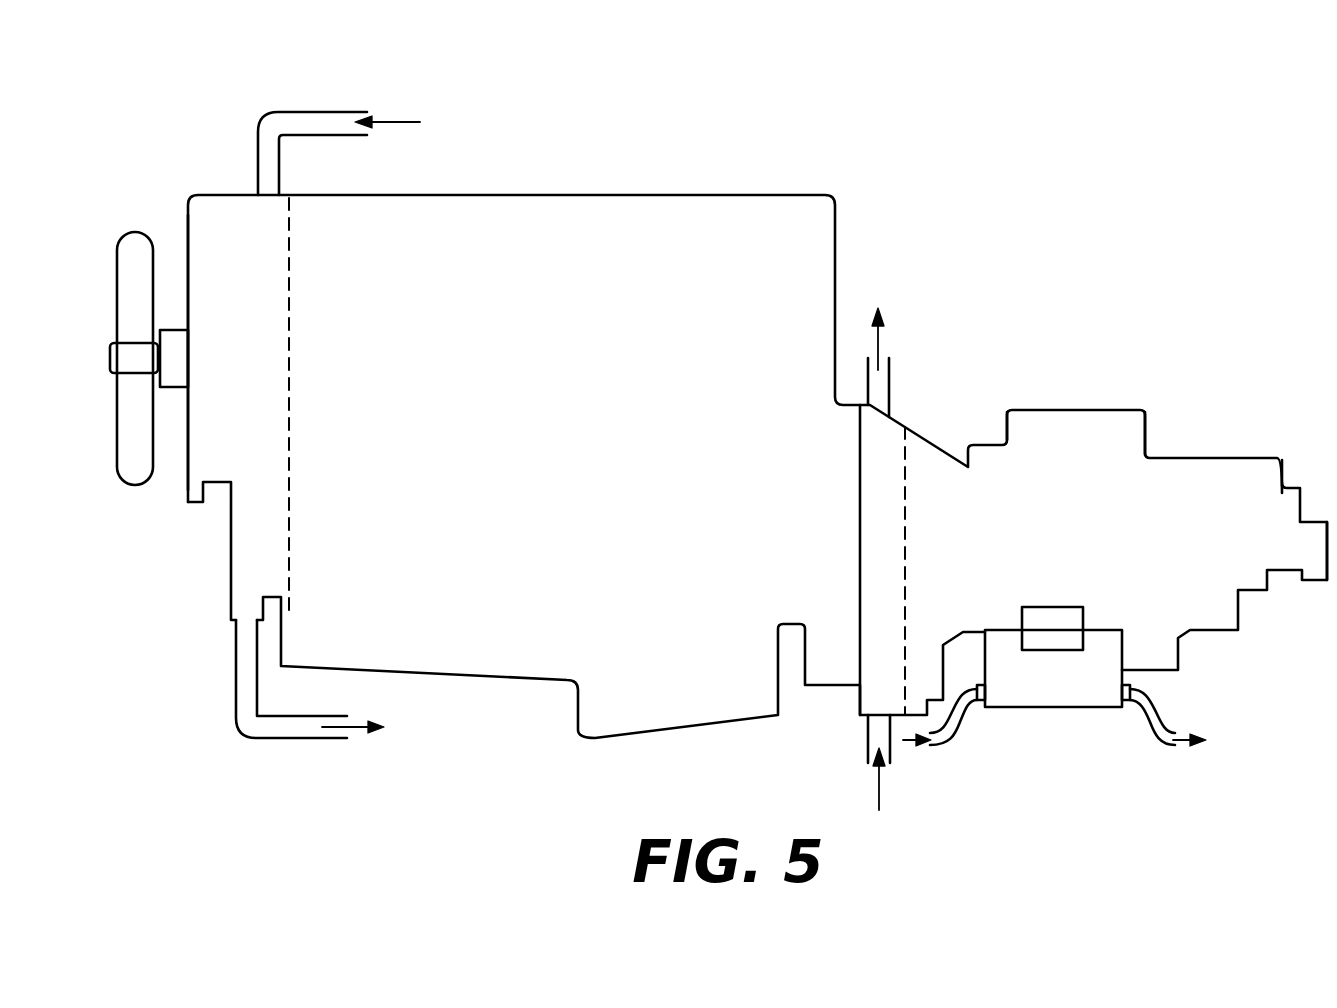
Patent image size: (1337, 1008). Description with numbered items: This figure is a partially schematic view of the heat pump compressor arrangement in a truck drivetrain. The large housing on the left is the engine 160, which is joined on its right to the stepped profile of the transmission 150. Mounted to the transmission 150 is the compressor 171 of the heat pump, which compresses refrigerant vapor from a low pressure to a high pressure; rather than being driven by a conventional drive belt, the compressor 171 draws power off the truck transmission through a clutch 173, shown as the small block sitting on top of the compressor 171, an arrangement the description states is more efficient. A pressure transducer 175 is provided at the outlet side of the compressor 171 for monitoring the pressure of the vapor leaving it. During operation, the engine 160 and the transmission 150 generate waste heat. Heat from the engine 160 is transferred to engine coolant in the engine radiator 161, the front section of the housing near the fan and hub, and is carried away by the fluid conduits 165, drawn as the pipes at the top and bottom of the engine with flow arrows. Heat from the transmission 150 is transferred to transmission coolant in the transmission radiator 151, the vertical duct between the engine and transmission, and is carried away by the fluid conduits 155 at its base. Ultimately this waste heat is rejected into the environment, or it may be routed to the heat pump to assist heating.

The transmission 150 is at (1062, 505).
The transmission radiator 151 is at (892, 457).
The fluid conduits 155 is at (868, 738).
The engine 160 is at (527, 182).
The engine radiator 161 is at (243, 220).
The fluid conduits 165 is at (338, 105).
The compressor 171 is at (1097, 698).
The clutch 173 is at (1057, 643).
The pressure transducer 175 is at (1160, 717).